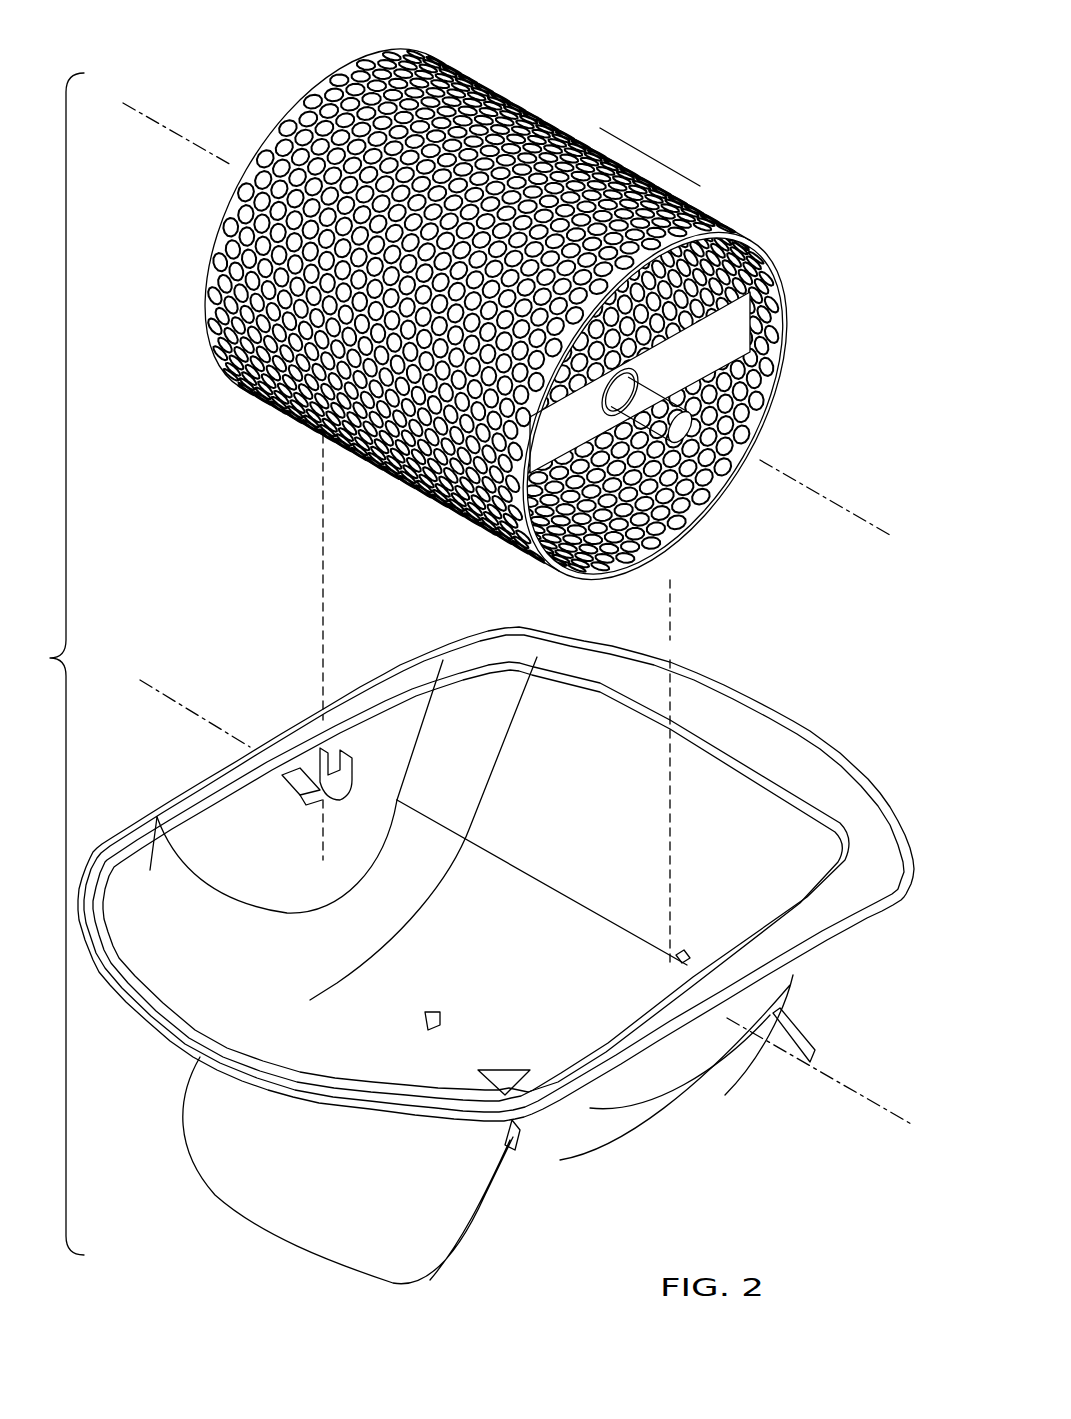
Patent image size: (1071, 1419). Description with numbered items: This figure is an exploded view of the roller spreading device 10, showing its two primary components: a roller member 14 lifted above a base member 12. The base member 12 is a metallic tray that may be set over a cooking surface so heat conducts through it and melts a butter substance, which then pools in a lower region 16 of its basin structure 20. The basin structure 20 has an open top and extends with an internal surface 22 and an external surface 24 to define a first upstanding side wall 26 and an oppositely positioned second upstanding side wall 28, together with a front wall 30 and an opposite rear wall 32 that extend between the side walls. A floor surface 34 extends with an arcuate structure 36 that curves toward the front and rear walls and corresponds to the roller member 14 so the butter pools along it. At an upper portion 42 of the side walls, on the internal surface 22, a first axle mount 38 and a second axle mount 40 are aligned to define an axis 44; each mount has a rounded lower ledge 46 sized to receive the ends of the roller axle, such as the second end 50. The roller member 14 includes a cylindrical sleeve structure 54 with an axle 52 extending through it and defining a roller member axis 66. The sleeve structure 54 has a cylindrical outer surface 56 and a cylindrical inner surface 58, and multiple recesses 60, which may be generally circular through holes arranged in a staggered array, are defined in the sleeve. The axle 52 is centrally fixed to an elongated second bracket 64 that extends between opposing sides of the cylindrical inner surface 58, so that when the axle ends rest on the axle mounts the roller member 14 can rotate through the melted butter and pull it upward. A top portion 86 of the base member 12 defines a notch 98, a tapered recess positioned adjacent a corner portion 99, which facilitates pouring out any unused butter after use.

The roller spreading device 10 is at (50, 664).
The base member 12 is at (511, 859).
The roller member 14 is at (506, 327).
The lower region 16 is at (593, 1163).
The basin structure 20 is at (805, 985).
The internal surface 22 is at (392, 715).
The external surface 24 is at (725, 1055).
The first upstanding side wall 26 is at (215, 848).
The second upstanding side wall 28 is at (658, 1095).
The front wall 30 is at (433, 1025).
The rear wall 32 is at (705, 770).
The floor surface 34 is at (455, 980).
The arcuate structure 36 is at (572, 938).
The first axle mount 38 is at (342, 760).
The second axle mount 40 is at (682, 955).
The upper portion 42 is at (258, 830).
The axis 44 is at (848, 1085).
The rounded lower ledge 46 is at (345, 810).
The second end 50 is at (685, 420).
The axle 52 is at (640, 395).
The cylindrical sleeve structure 54 is at (530, 106).
The cylindrical outer surface 56 is at (672, 190).
The cylindrical inner surface 58 is at (683, 535).
The multiple recesses 60 is at (690, 505).
The second bracket 64 is at (740, 330).
The roller member axis 66 is at (506, 319).
The top portion 86 is at (165, 905).
The notch 98 is at (508, 1078).
The corner portion 99 is at (515, 1150).